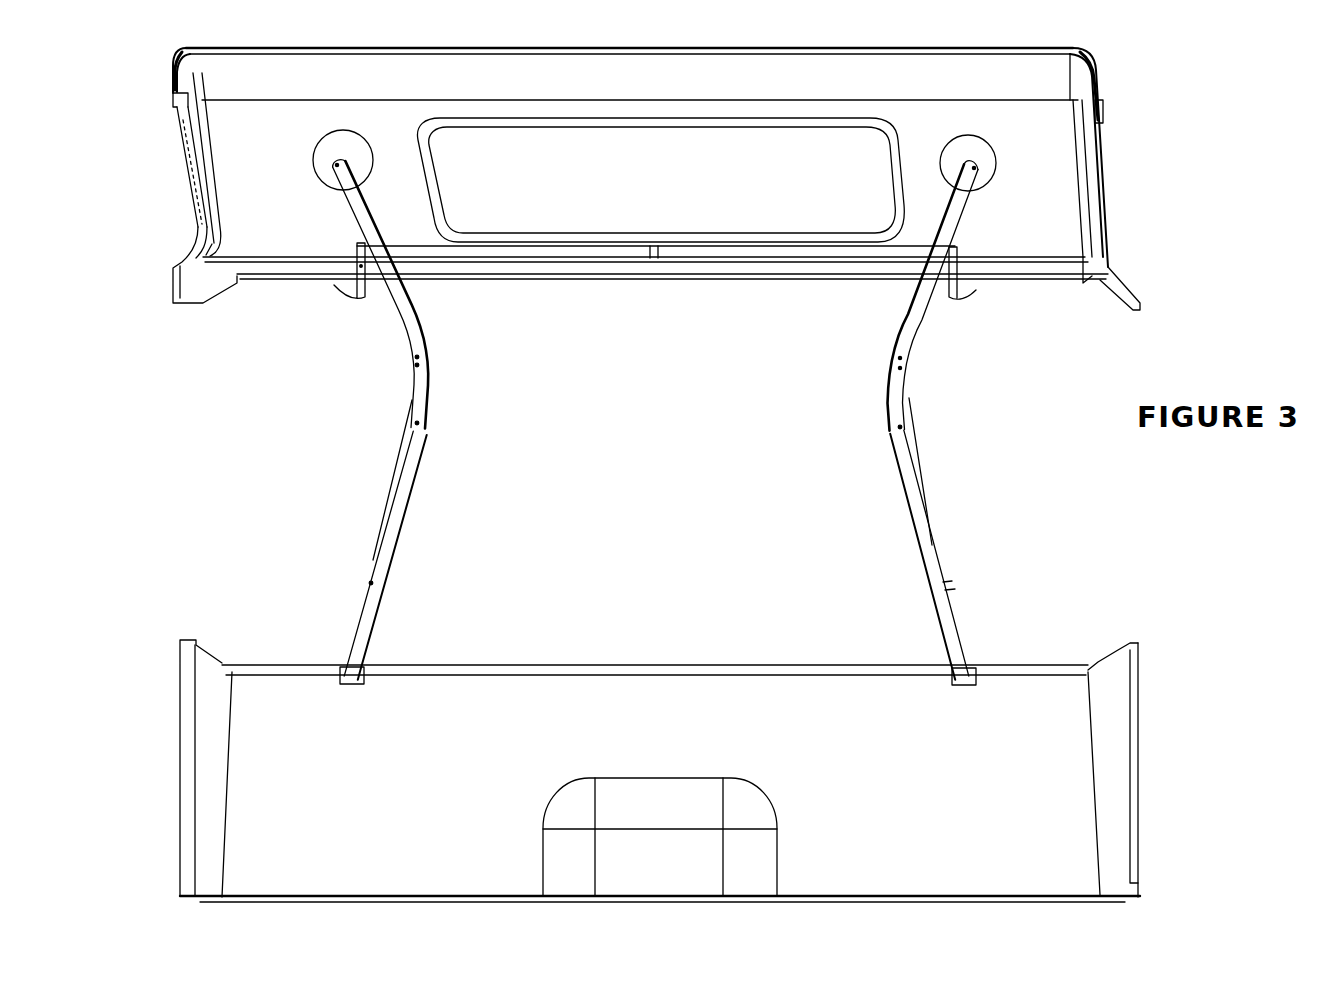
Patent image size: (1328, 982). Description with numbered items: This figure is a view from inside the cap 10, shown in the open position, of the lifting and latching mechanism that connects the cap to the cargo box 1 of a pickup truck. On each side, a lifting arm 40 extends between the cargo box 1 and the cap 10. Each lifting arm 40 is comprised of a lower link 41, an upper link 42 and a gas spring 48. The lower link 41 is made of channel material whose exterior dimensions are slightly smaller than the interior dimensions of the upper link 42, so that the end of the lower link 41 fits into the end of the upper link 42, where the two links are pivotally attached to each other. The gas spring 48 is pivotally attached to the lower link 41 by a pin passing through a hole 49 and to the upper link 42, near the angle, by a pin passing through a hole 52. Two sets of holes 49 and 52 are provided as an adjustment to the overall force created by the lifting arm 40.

The cargo box 1 is at (1148, 792).
The upper housing / cover 10 is at (1143, 181).
The lifting arm 40 is at (686, 422).
The lower link 41 is at (385, 557).
The upper link 42 is at (420, 323).
The gas spring 48 is at (930, 500).
The hole 49 is at (945, 594).
The hole 52 is at (903, 372).